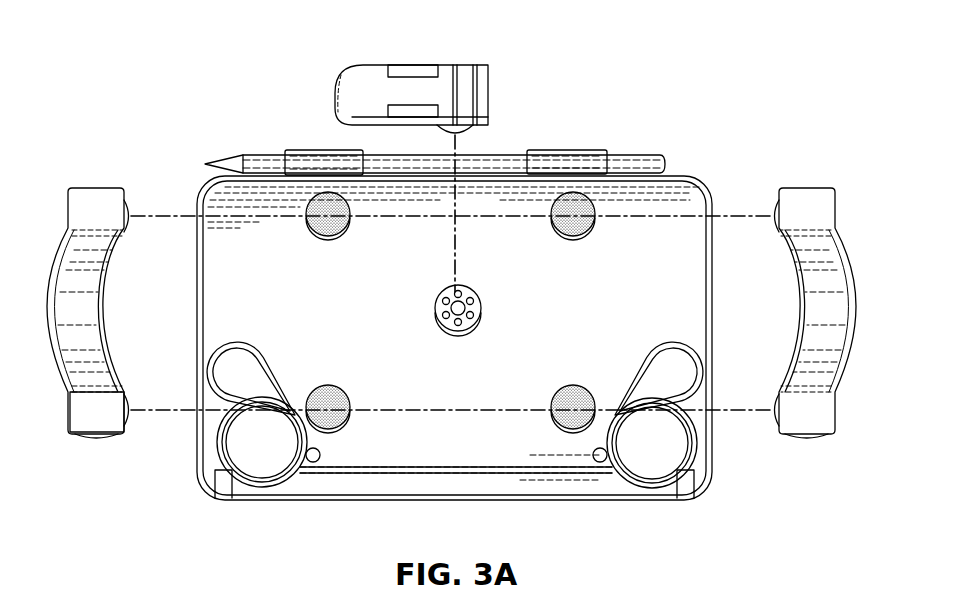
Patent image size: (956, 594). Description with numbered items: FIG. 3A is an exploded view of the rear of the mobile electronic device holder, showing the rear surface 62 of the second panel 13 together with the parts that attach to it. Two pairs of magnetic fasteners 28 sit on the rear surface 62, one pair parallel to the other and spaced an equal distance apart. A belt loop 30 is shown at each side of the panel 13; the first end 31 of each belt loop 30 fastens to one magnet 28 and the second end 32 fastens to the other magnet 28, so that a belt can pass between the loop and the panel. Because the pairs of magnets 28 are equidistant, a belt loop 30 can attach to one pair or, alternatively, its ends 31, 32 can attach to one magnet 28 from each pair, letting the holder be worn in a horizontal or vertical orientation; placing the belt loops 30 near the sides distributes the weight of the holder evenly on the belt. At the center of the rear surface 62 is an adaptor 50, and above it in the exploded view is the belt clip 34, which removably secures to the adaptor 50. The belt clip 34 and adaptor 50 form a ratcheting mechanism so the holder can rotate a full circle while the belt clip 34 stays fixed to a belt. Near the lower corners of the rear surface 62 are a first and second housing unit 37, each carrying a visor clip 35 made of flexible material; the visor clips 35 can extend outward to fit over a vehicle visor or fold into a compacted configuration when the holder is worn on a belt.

The second panel 13 is at (752, 130).
The magnetic fasteners 28 is at (327, 200).
The belt loops 30 is at (98, 303).
The first end 31 is at (133, 210).
The second end 32 is at (133, 418).
The belt clip 34 is at (362, 82).
The visor clips 35 is at (258, 362).
The housing units 37 is at (653, 486).
The adaptor 50 is at (440, 306).
The rear surface 62 is at (564, 283).